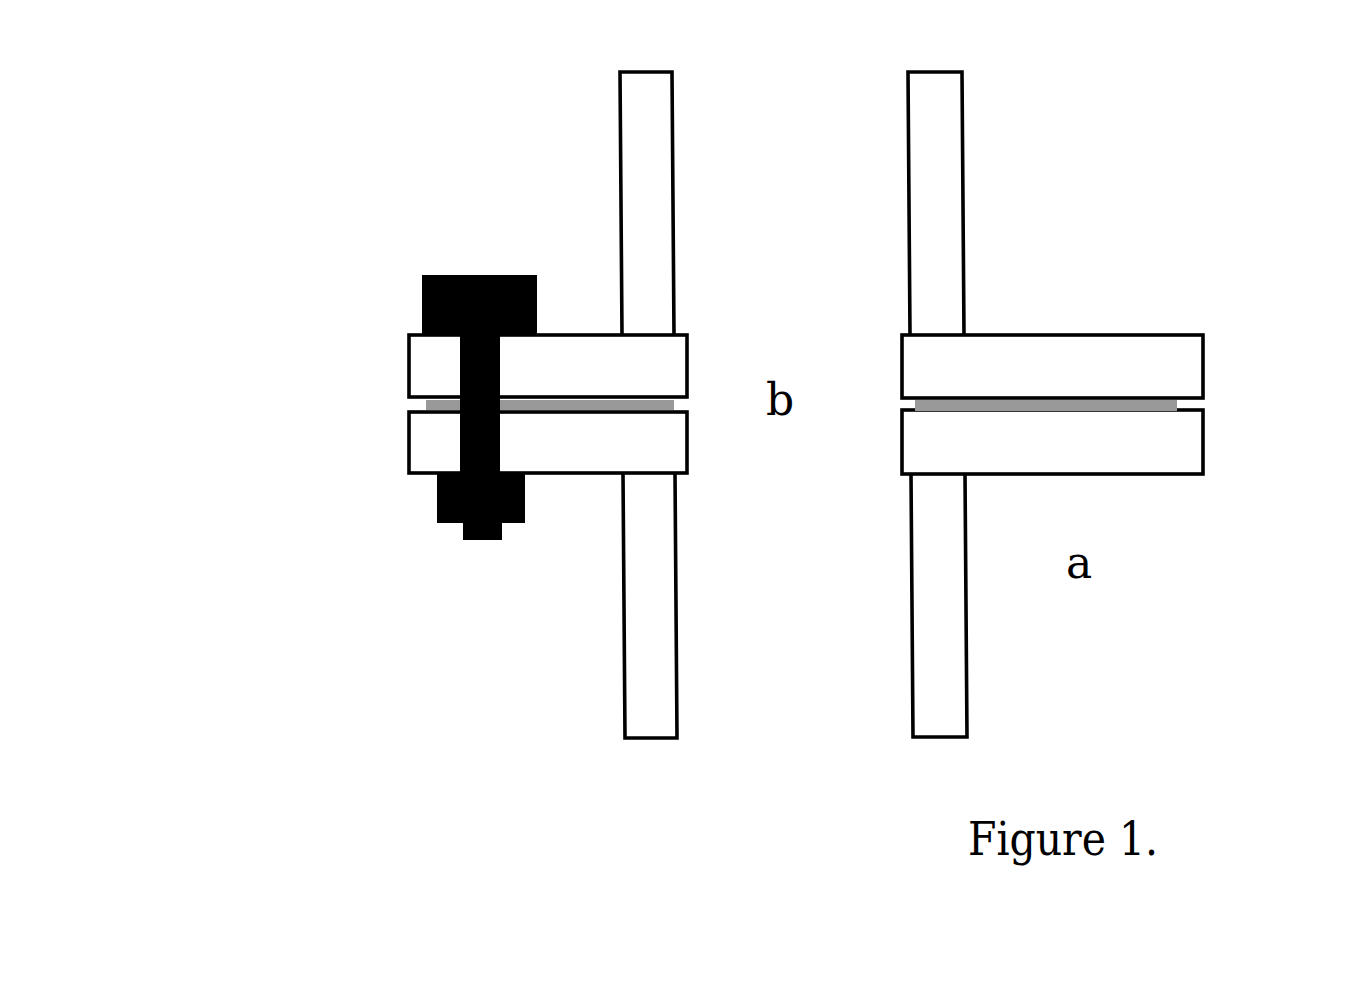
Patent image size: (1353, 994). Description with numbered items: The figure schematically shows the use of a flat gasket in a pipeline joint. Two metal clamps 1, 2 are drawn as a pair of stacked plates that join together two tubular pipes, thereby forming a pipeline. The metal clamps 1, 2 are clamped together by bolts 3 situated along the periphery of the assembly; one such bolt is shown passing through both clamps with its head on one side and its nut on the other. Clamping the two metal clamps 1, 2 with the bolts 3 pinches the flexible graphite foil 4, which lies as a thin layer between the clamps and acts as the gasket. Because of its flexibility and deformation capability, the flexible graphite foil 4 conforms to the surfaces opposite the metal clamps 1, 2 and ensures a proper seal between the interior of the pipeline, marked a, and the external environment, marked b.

The metal clamp 1 is at (597, 313).
The metal clamp 2 is at (587, 487).
The bolt 3 is at (435, 500).
The flexible graphite foil 4 is at (1008, 397).